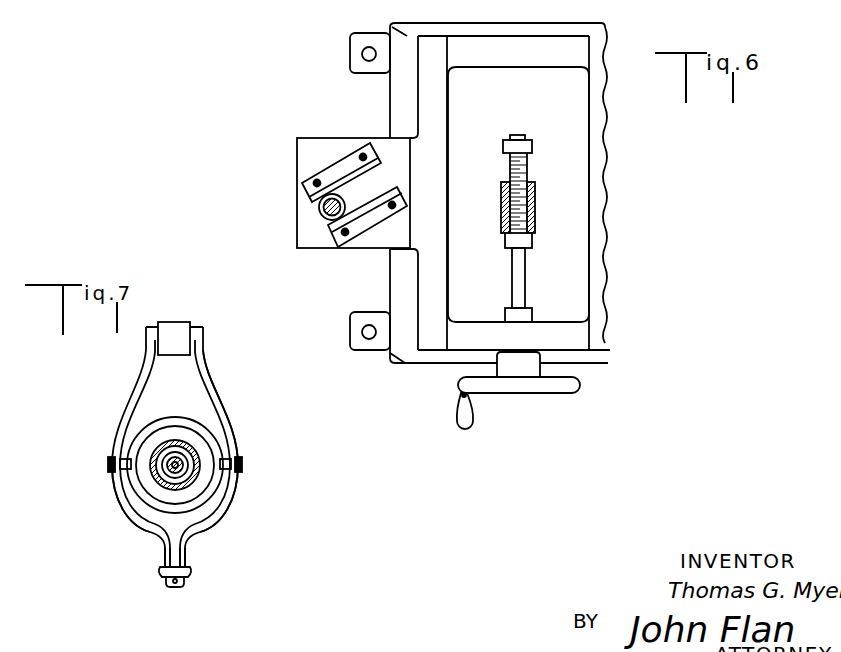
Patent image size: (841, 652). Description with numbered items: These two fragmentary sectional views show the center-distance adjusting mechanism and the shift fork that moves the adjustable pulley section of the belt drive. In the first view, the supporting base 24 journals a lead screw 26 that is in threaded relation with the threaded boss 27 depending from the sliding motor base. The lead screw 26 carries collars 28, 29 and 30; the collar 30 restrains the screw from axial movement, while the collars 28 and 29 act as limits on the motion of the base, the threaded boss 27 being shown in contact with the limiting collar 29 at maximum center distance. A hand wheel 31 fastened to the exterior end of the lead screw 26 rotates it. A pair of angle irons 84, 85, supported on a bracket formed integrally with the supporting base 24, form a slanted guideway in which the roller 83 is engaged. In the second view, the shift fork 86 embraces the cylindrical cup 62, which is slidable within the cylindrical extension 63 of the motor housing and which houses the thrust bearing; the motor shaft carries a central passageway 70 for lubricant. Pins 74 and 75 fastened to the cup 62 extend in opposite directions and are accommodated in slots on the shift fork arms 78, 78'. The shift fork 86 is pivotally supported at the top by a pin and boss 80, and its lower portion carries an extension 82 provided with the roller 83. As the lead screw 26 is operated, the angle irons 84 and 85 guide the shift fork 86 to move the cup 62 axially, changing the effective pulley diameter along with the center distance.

In FIG. 6, the supporting base 24 is at (562, 42).
In FIG. 6, the lead screw 26 is at (525, 278).
In FIG. 6, the threaded boss 27 is at (535, 197).
In FIG. 6, the collar 28 is at (532, 146).
In FIG. 6, the limiting collar 29 is at (537, 233).
In FIG. 6, the collar 30 is at (532, 310).
In FIG. 6, the hand wheel 31 is at (510, 393).
In FIG. 6, the roller 83 is at (318, 207).
In FIG. 7, the roller 83 is at (190, 577).
In FIG. 6, the angle iron 84 is at (340, 170).
In FIG. 6, the angle iron 85 is at (364, 222).
In FIG. 7, the boss 80 is at (172, 325).
In FIG. 7, the shift fork arm 78 is at (155, 447).
In FIG. 7, the frame arm 78' is at (246, 407).
In FIG. 7, the shift fork 86 is at (232, 505).
In FIG. 7, the cylindrical extension 63 is at (155, 415).
In FIG. 7, the cylindrical cup 62 is at (188, 427).
In FIG. 7, the central passageway 70 is at (198, 452).
In FIG. 7, the pin 75 is at (108, 463).
In FIG. 7, the pin 74 is at (243, 462).
In FIG. 7, the extension 82 is at (185, 550).